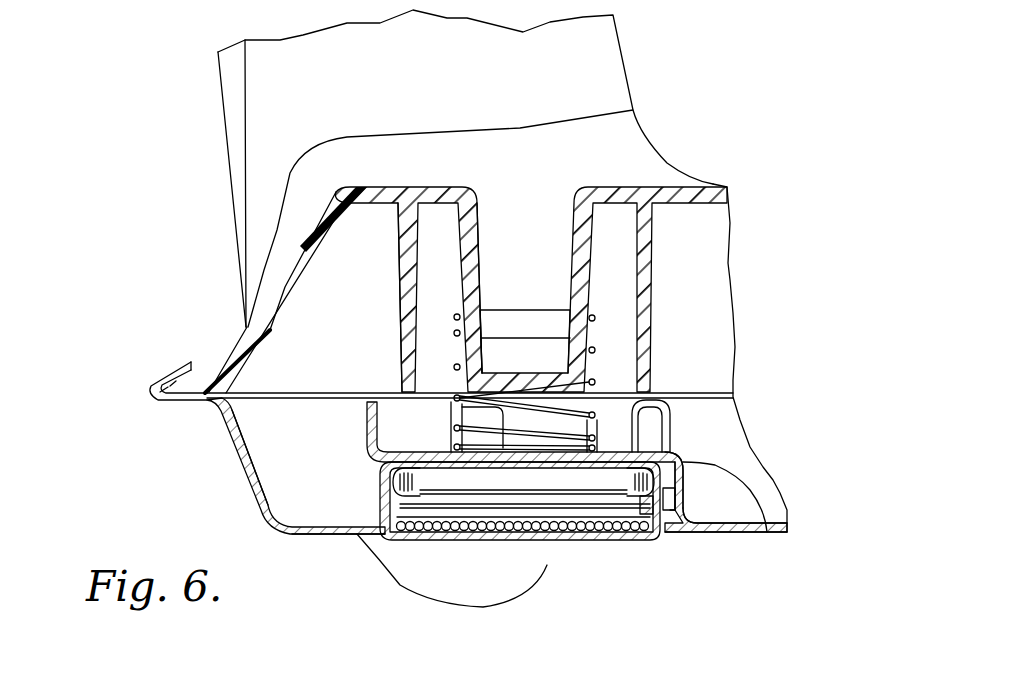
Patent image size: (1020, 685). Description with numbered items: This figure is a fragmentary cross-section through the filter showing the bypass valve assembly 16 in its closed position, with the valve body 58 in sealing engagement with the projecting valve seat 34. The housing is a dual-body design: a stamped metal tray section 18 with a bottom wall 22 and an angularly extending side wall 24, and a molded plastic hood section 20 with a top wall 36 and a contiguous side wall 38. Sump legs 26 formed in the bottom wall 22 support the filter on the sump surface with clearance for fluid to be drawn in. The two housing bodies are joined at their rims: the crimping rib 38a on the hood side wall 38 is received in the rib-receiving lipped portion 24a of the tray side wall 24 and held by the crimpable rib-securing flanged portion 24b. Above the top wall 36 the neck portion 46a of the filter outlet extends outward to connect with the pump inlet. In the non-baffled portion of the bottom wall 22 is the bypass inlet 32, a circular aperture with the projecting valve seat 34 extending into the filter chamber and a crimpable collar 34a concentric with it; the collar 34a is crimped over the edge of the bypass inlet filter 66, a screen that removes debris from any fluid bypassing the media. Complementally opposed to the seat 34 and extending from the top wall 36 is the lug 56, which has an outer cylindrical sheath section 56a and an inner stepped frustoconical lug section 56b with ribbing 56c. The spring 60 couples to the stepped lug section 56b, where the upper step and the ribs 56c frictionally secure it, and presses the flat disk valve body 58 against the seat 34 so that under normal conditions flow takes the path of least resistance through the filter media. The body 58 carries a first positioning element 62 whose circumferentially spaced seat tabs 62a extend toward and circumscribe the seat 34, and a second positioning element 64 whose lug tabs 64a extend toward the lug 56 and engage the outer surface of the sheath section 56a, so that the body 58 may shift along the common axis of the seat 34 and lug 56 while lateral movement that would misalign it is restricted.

The neck portion 46a is at (270, 94).
The top wall 36 is at (710, 187).
The side wall 38 is at (282, 292).
The crimping rib 38a is at (207, 380).
The hood section 20 is at (283, 355).
The rib-securing flanged portion 24b is at (185, 362).
The rib-receiving lipped portion 24a is at (192, 404).
The side wall 24 is at (257, 487).
The tray section 18 is at (262, 430).
The bottom wall 22 is at (332, 534).
The sump legs 26 is at (435, 577).
The bypass valve assembly 16 is at (685, 368).
The lug 56 is at (519, 222).
The outer cylindrical sheath section 56a is at (408, 335).
The inner stepped frustoconical lug section 56b is at (470, 233).
The ribbing 56c is at (453, 310).
The spring 60 is at (585, 412).
The valve body 58 is at (413, 460).
The first positioning element 62 is at (696, 485).
The seat tabs 62a is at (684, 498).
The second positioning element 64 is at (683, 420).
The lug tabs 64a is at (647, 433).
The bypass inlet 32 is at (533, 478).
The projecting valve seat 34 is at (623, 483).
The crimpable collar 34a is at (645, 463).
The bypass inlet filter 66 is at (510, 528).